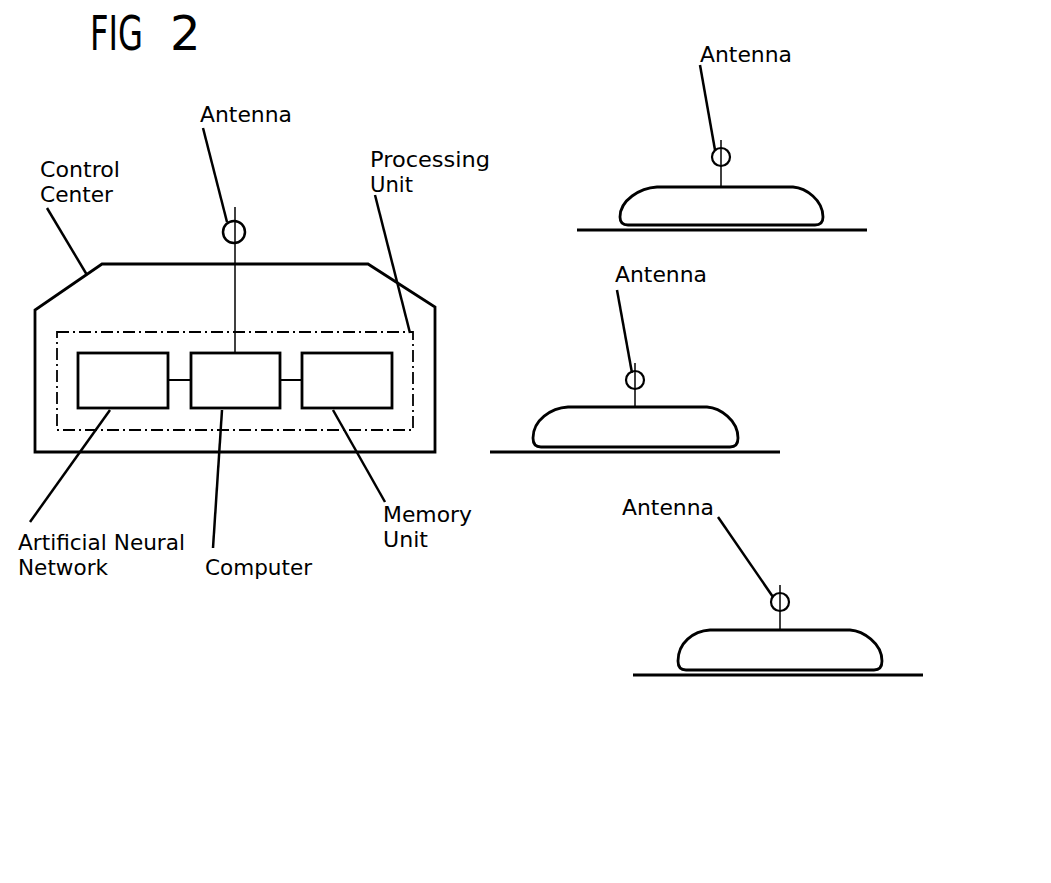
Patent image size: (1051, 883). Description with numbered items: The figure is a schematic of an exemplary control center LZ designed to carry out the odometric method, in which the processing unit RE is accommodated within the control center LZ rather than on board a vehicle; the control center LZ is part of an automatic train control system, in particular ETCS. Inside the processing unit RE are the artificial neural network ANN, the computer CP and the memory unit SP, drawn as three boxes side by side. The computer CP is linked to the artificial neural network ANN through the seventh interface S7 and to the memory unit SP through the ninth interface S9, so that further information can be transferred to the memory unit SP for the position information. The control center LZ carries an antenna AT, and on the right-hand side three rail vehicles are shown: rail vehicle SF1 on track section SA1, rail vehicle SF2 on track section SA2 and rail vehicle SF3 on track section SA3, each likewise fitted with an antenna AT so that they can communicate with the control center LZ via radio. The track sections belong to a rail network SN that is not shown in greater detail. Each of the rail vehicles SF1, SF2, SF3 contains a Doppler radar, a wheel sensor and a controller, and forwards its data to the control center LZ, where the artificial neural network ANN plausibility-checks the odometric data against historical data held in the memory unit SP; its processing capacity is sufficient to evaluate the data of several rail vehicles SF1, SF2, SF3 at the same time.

The control center LZ is at (165, 264).
The processing unit RE is at (298, 332).
The artificial neural network ANN is at (123, 380).
The computer CP is at (235, 380).
The memory unit SP is at (347, 380).
The seventh interface S7 is at (177, 381).
The ninth interface S9 is at (293, 381).
The antenna AT is at (246, 232).
The rail vehicle SF1 is at (737, 630).
The rail vehicle SF2 is at (592, 407).
The rail vehicle SF3 is at (678, 187).
The track section SA1 is at (910, 678).
The track section SA2 is at (765, 455).
The track section SA3 is at (852, 232).
The rail network SN is at (648, 740).